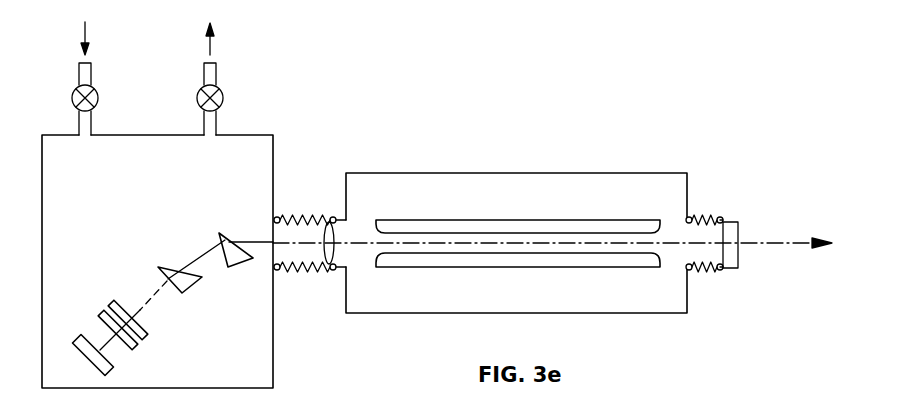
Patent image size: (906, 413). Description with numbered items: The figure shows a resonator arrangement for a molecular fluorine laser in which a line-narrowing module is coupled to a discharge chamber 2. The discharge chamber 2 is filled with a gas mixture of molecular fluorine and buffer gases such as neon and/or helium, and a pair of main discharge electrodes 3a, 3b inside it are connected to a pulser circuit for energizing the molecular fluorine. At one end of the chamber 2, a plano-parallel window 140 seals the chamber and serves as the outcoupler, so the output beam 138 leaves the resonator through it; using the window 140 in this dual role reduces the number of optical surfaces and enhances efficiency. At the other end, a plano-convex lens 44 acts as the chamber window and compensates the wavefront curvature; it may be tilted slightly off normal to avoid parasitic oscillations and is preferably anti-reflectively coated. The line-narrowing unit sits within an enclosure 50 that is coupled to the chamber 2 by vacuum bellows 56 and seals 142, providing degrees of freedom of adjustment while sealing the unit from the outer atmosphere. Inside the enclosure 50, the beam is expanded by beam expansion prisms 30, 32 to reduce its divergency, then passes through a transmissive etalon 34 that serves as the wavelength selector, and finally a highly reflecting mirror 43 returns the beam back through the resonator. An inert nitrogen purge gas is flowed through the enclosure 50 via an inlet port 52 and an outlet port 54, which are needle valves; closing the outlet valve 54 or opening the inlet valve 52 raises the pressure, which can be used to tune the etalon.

The discharge chamber 2 is at (598, 172).
The main discharge electrode 3a is at (418, 225).
The main discharge electrode 3b is at (448, 258).
The beam expansion prism 30 is at (220, 230).
The beam expansion prism 32 is at (162, 263).
The transmissive etalon 34 is at (112, 312).
The highly reflecting mirror 43 is at (78, 334).
The lens 44 is at (330, 235).
The enclosure 50 is at (273, 370).
The inlet port 52 is at (98, 90).
The outlet port 54 is at (223, 90).
The vacuum bellows 56 is at (303, 213).
The output beam 138 is at (798, 238).
The window 140 is at (733, 220).
The seals 142 is at (332, 215).